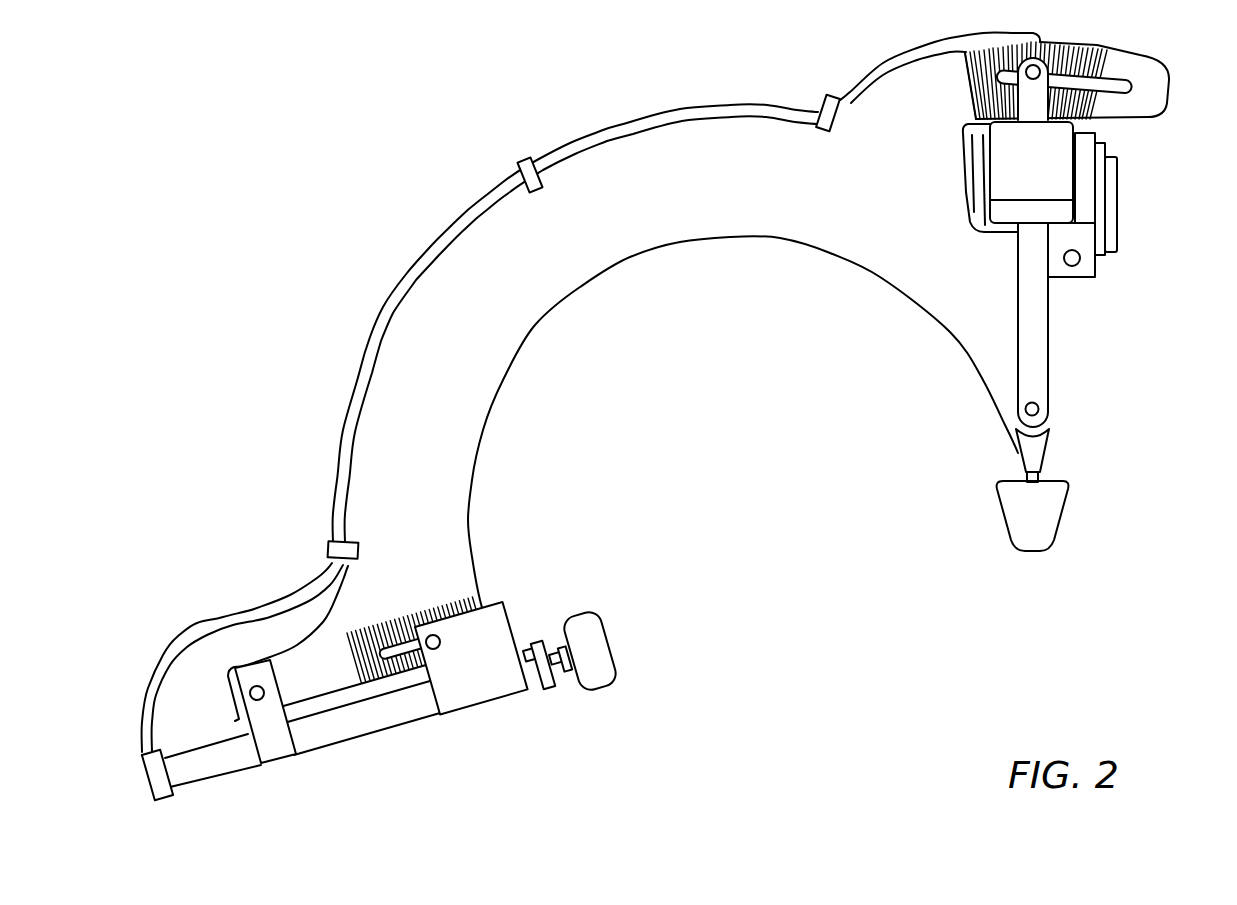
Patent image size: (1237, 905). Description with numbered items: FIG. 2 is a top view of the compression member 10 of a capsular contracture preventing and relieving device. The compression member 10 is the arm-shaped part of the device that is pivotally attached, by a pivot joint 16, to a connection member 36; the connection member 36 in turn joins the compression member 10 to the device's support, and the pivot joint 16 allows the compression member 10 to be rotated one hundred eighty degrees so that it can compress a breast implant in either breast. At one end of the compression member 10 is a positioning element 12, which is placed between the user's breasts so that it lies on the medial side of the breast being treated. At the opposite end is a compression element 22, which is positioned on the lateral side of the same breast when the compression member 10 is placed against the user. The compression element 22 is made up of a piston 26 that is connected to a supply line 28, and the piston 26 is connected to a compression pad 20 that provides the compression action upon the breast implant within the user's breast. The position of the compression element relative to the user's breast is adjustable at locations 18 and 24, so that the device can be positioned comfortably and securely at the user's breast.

The compression member 10 is at (678, 215).
The positioning element 12 is at (1038, 515).
The pivot joint 16 is at (1047, 176).
The adjustment location 18 is at (1038, 70).
The compression pad 20 is at (598, 647).
The compression element 22 is at (453, 716).
The adjustment location 24 is at (440, 641).
The piston 26 is at (318, 728).
The supply line 28 is at (157, 660).
The connection member 36 is at (1082, 267).